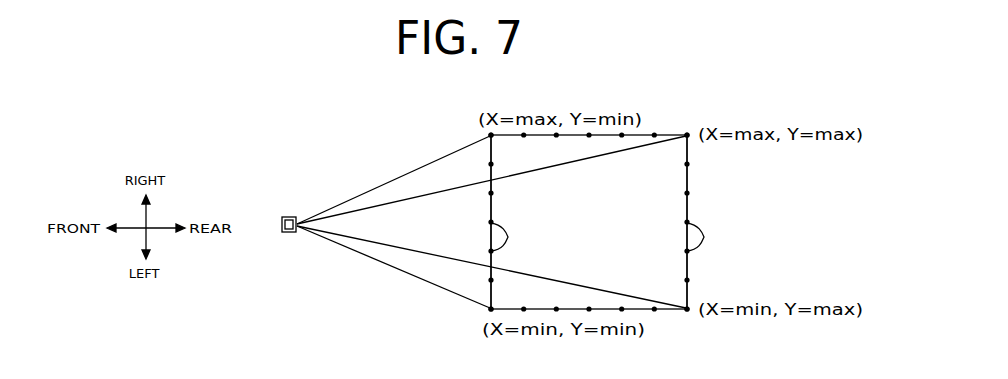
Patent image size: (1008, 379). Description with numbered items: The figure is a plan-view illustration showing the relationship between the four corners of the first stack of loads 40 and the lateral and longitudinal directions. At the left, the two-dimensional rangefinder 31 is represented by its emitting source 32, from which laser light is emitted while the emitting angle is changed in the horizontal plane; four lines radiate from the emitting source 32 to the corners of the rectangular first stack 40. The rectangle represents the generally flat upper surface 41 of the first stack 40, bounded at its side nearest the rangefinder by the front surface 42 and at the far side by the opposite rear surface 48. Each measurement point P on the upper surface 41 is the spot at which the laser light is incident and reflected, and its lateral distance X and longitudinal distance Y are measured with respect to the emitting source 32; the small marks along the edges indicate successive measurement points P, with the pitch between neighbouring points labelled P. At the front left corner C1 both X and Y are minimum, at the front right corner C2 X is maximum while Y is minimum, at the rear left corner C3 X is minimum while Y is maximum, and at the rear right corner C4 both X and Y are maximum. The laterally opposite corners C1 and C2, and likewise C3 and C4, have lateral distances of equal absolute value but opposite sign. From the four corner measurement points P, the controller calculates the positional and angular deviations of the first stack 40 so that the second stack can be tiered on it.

The two-dimensional rangefinder 31 is at (283, 215).
The emitting source 32 is at (281, 228).
The first stack of loads 40 is at (738, 186).
The upper surface 41 is at (689, 207).
The front surface 42 is at (489, 208).
The rear surface 48 is at (690, 267).
The front left corner C1 is at (488, 311).
The front right corner C2 is at (488, 134).
The rear left corner C3 is at (687, 312).
The rear right corner C4 is at (687, 132).
The measurement point P is at (508, 237).